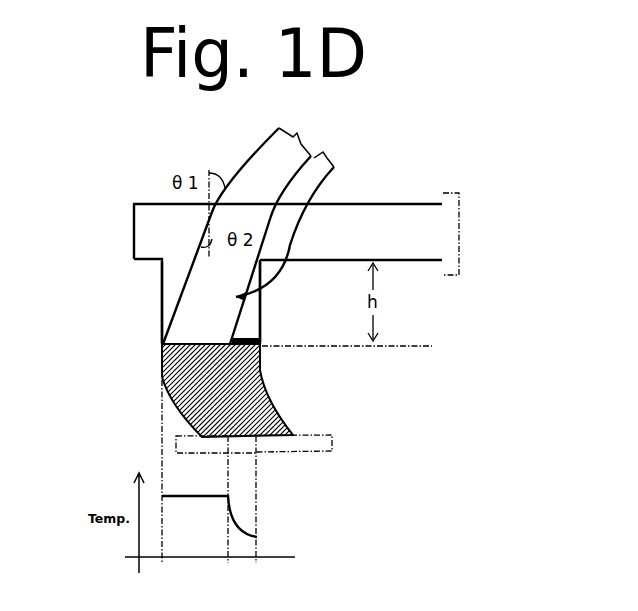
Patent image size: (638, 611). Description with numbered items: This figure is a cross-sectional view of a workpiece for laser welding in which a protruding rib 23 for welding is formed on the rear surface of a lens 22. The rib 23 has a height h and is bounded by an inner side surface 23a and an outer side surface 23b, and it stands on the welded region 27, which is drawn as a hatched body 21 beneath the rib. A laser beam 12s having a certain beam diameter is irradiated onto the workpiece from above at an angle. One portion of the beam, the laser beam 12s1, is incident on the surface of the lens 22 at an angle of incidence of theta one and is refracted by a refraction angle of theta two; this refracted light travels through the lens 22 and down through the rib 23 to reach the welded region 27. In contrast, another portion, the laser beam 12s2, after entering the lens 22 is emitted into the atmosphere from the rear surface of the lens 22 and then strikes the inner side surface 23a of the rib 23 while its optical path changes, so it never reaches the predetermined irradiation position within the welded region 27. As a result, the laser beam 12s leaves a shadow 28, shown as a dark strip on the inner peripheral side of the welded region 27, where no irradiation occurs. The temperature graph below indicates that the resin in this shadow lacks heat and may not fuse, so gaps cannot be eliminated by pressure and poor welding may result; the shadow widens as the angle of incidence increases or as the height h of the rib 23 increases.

The laser beam 12s is at (300, 222).
The laser beam portion 12s1 is at (256, 224).
The laser beam portion 12s2 is at (308, 215).
The block 21 is at (182, 377).
The lens 22 is at (145, 221).
The rib 23 is at (171, 277).
The inner side surface 23a is at (272, 306).
The outer side surface 23b is at (149, 308).
The welded region 27 is at (184, 344).
The shadow 28 is at (264, 338).